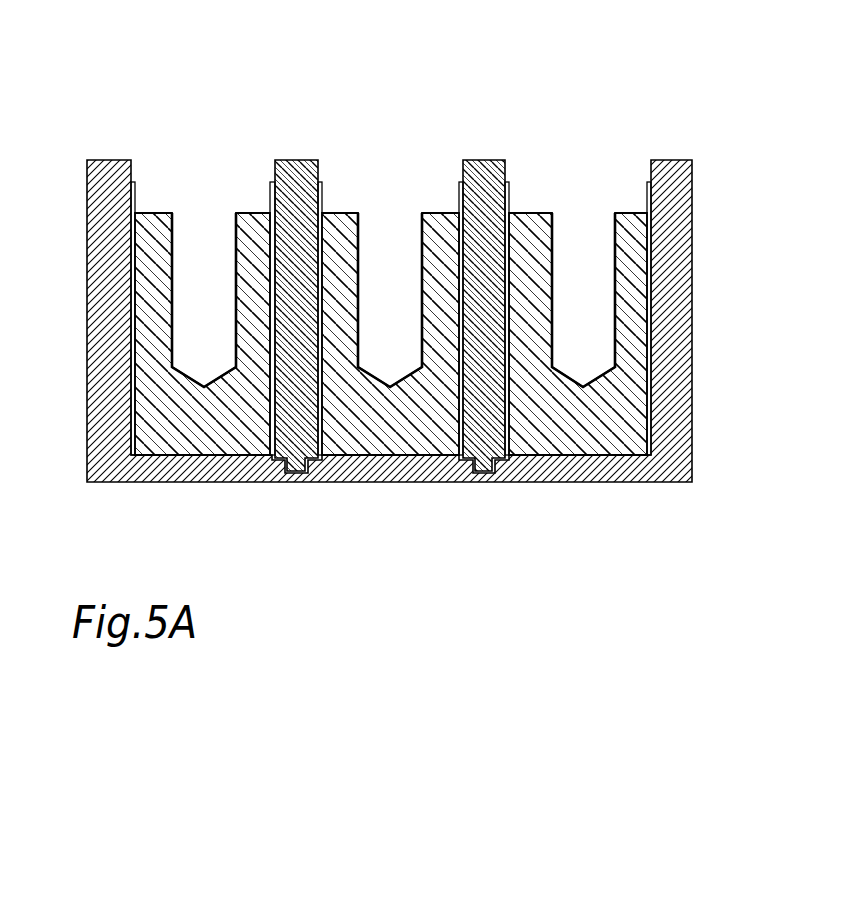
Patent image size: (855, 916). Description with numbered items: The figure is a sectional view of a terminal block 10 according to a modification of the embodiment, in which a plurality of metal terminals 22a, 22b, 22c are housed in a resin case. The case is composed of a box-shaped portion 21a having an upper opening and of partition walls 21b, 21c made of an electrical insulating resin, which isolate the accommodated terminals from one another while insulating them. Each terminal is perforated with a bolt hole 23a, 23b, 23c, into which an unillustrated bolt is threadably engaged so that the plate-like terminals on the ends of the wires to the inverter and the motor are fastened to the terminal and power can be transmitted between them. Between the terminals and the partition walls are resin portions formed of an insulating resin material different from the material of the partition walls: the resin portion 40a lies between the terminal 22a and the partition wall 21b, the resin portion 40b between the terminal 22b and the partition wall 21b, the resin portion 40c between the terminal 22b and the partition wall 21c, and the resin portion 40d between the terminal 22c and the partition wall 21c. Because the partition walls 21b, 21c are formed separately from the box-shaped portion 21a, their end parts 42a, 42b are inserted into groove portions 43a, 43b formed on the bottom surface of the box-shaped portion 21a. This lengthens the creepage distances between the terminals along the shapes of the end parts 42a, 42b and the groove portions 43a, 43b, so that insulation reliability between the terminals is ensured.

The terminal block 10 is at (681, 104).
The box-shaped portion 21a is at (693, 295).
The partition wall 21b is at (301, 160).
The partition wall 21c is at (488, 160).
The terminal 22a is at (157, 212).
The terminal 22b is at (342, 212).
The terminal 22c is at (531, 212).
The bolt hole 23a is at (208, 212).
The bolt hole 23b is at (395, 212).
The bolt hole 23c is at (584, 212).
The resin portion 40a is at (267, 405).
The resin portion 40b is at (328, 403).
The resin portion 40c is at (457, 403).
The resin portion 40d is at (508, 402).
The end part 42a is at (272, 482).
The end part 42b is at (465, 482).
The groove portion 43a is at (307, 482).
The groove portion 43b is at (497, 482).